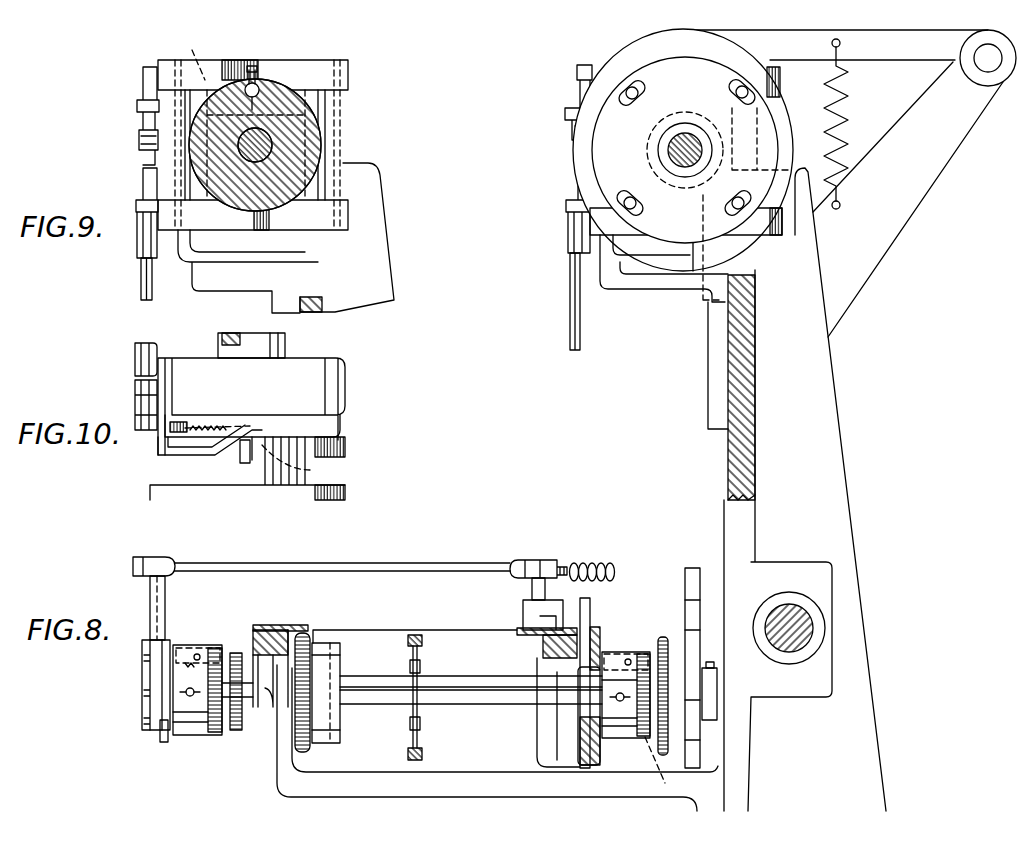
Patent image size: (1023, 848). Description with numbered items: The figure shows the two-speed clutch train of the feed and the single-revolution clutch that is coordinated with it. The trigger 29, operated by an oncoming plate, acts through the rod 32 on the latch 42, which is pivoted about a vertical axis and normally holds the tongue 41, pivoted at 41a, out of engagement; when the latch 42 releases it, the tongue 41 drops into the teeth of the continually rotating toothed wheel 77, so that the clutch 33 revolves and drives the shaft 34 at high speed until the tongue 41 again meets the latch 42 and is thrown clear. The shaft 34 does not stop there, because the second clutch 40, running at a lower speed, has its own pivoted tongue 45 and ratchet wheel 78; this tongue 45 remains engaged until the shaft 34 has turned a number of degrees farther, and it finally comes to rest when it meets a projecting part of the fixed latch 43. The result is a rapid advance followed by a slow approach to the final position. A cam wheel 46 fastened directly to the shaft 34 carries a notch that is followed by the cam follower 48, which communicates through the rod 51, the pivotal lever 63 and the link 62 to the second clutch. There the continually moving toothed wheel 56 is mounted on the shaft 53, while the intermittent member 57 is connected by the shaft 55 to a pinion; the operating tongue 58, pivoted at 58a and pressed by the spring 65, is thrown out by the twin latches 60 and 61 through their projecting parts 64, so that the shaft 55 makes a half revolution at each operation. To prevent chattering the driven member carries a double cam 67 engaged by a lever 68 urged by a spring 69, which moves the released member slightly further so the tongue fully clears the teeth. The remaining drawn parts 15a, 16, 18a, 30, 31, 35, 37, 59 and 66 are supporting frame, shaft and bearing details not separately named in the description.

In FIG. 8, the gear 15a is at (522, 741).
In FIG. 8, the bearing block 16 is at (421, 636).
In FIG. 8, the rod 18a is at (420, 760).
In FIG. 8, the trigger 29 is at (518, 628).
In FIG. 8, the coupling 30 is at (540, 560).
In FIG. 8, the spring 31 is at (585, 563).
In FIG. 8, the rod 32 is at (396, 558).
In FIG. 8, the clutch 33 is at (177, 681).
In FIG. 8, the shaft 34 is at (437, 684).
In FIG. 8, the gear 35 is at (341, 736).
In FIG. 8, the shaft 37 is at (383, 690).
In FIG. 8, the second clutch 40 is at (612, 654).
In FIG. 8, the tongue 41 is at (163, 659).
In FIG. 8, the pivot of tongue 41a is at (198, 654).
In FIG. 8, the latch 42 is at (163, 731).
In FIG. 8, the fixed latch 43 is at (600, 740).
In FIG. 8, the pivoted tongue 45 is at (650, 650).
In FIG. 8, the cam wheel 46 is at (718, 736).
In FIG. 8, the cam follower 48 is at (692, 576).
In FIG. 9, the rod 51 is at (140, 283).
In FIG. 8, the rod 51 is at (568, 294).
In FIG. 10, the shaft 53 is at (225, 338).
In FIG. 9, the shaft 55 is at (272, 148).
In FIG. 8, the shaft 55 is at (668, 150).
In FIG. 10, the toothed wheel 56 is at (245, 425).
In FIG. 9, the clutch member 57 is at (300, 136).
In FIG. 10, the clutch member 57 is at (300, 471).
In FIG. 9, the operating tongue 58 is at (258, 72).
In FIG. 10, the operating tongue 58 is at (255, 443).
In FIG. 9, the pivot of tongue 58a is at (189, 48).
In FIG. 9, the frame body 59 is at (340, 107).
In FIG. 10, the frame body 59 is at (296, 371).
In FIG. 8, the frame body 59 is at (610, 270).
In FIG. 9, the latch 60 is at (315, 75).
In FIG. 10, the latch 60 is at (340, 425).
In FIG. 8, the latch 60 is at (780, 80).
In FIG. 9, the latch 61 is at (350, 221).
In FIG. 10, the latch 61 is at (345, 447).
In FIG. 8, the latch 61 is at (780, 236).
In FIG. 9, the link 62 is at (148, 101).
In FIG. 10, the link 62 is at (150, 406).
In FIG. 8, the link 62 is at (572, 107).
In FIG. 9, the pivotal lever 63 is at (146, 196).
In FIG. 10, the pivotal lever 63 is at (147, 349).
In FIG. 8, the pivotal lever 63 is at (575, 206).
In FIG. 9, the projecting parts 64 is at (229, 61).
In FIG. 10, the projecting parts 64 is at (250, 434).
In FIG. 9, the spring 65 is at (262, 92).
In FIG. 8, the disc 66 is at (600, 127).
In FIG. 8, the double cam 67 is at (648, 40).
In FIG. 8, the lever 68 is at (853, 45).
In FIG. 8, the spring 69 is at (846, 122).
In FIG. 8, the toothed wheel 77 is at (209, 737).
In FIG. 8, the ratchet wheel 78 is at (672, 768).